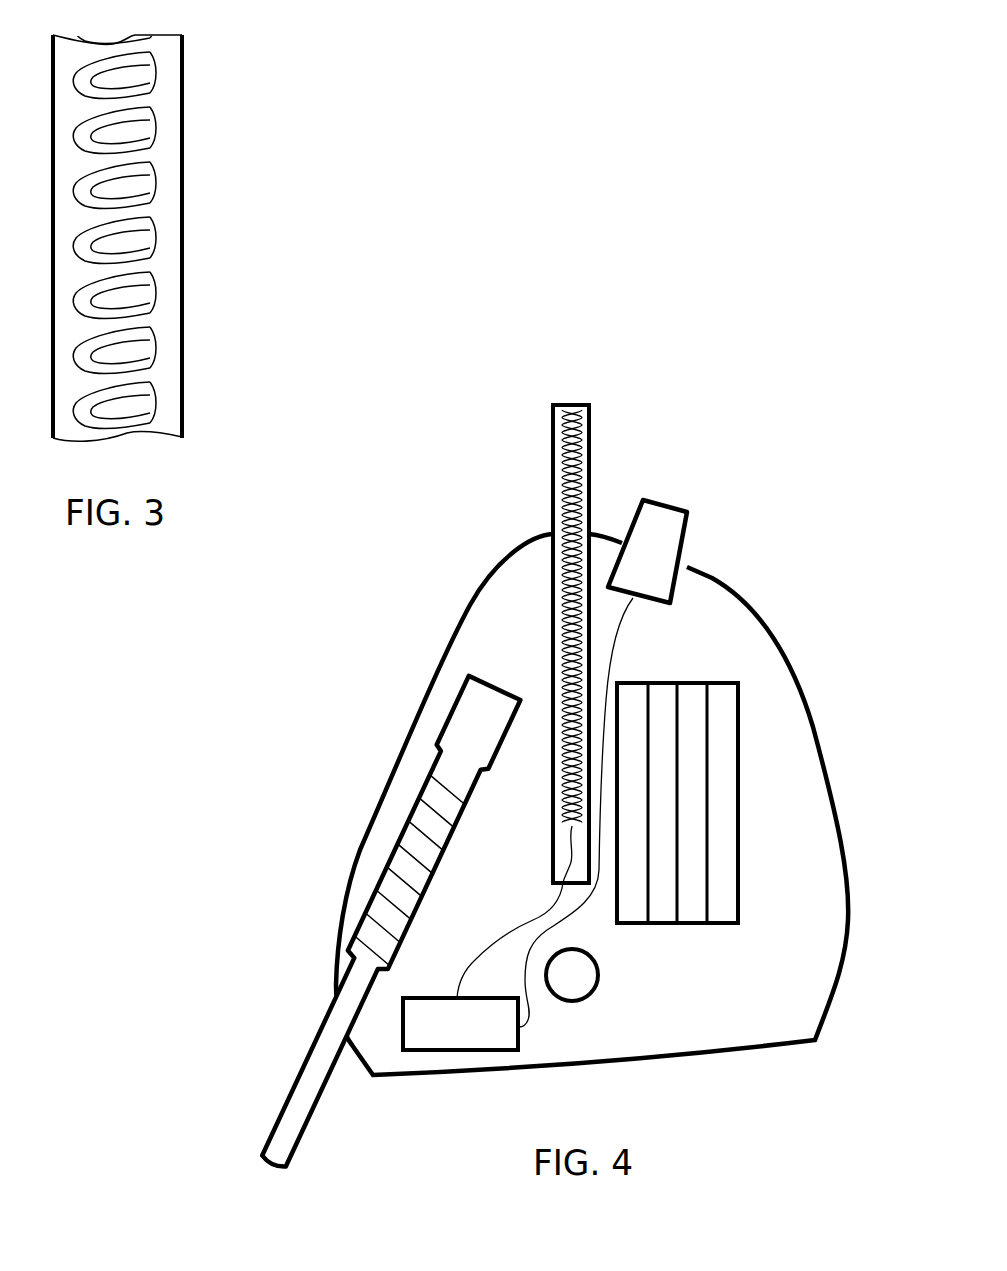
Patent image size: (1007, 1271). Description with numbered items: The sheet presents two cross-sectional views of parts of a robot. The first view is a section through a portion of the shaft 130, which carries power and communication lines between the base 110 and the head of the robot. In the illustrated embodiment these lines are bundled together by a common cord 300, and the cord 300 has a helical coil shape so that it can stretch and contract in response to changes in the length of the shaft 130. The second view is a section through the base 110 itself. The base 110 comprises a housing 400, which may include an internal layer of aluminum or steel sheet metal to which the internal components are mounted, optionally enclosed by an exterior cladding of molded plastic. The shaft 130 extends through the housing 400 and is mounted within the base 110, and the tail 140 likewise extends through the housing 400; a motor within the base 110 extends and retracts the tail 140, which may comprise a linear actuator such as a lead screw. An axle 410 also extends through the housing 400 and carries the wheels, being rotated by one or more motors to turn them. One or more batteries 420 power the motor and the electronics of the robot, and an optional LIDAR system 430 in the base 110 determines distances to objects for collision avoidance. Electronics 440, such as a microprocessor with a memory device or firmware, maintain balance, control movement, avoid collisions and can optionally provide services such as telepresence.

In FIG. 4, the base 110 is at (531, 786).
In FIG. 3, the shaft 130 is at (187, 162).
In FIG. 4, the shaft 130 is at (555, 452).
In FIG. 4, the tail 140 is at (320, 1040).
In FIG. 3, the cord 300 is at (150, 220).
In FIG. 4, the housing 400 is at (500, 560).
In FIG. 4, the axle 410 is at (602, 977).
In FIG. 4, the batteries 420 is at (740, 717).
In FIG. 4, the Light Detection and Ranging (LIDAR) system 430 is at (685, 538).
In FIG. 4, the electronics 440 is at (520, 1032).